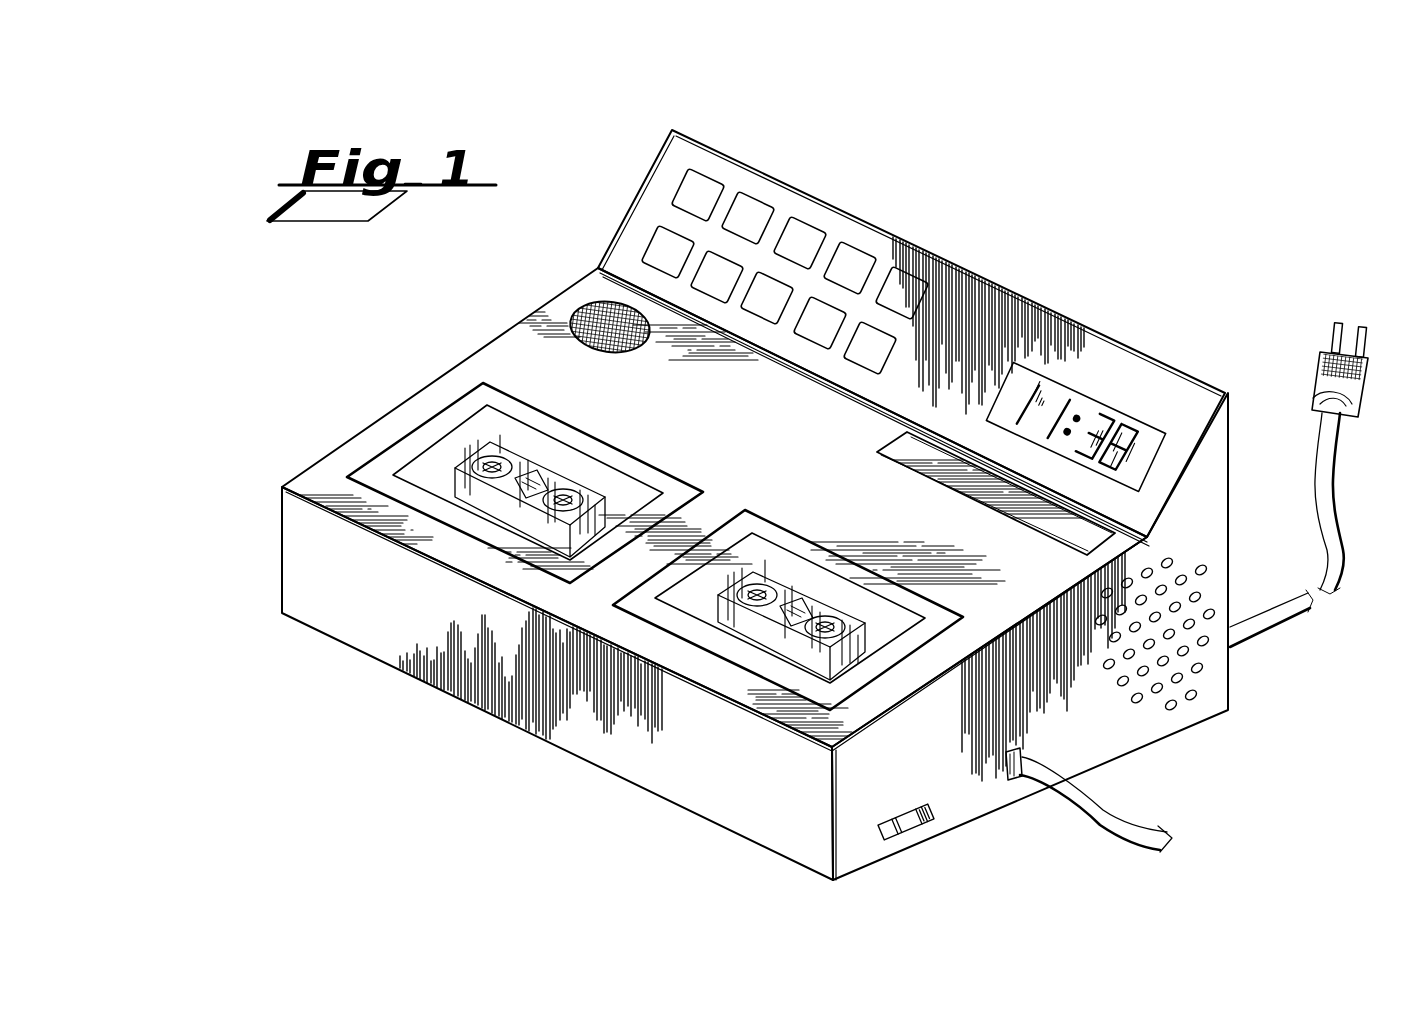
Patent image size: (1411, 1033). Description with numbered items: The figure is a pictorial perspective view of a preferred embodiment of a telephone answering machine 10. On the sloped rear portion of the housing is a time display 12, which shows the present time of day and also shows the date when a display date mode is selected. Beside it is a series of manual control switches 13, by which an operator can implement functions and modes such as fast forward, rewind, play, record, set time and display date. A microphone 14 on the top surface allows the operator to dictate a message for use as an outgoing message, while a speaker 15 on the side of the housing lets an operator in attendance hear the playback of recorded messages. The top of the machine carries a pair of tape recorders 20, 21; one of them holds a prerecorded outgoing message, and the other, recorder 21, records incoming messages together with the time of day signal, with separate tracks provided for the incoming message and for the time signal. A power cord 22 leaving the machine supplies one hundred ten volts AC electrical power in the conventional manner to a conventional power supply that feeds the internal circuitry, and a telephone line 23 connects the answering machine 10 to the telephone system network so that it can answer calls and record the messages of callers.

The telephone answering machine 10 is at (428, 347).
The time display 12 is at (1107, 407).
The manual control switches 13 is at (650, 204).
The microphone 14 is at (585, 305).
The speaker 15 is at (1200, 697).
The tape recorder 20 is at (493, 547).
The tape recorder 21 is at (707, 652).
The power cord 22 is at (1325, 565).
The telephone line 23 is at (1103, 812).